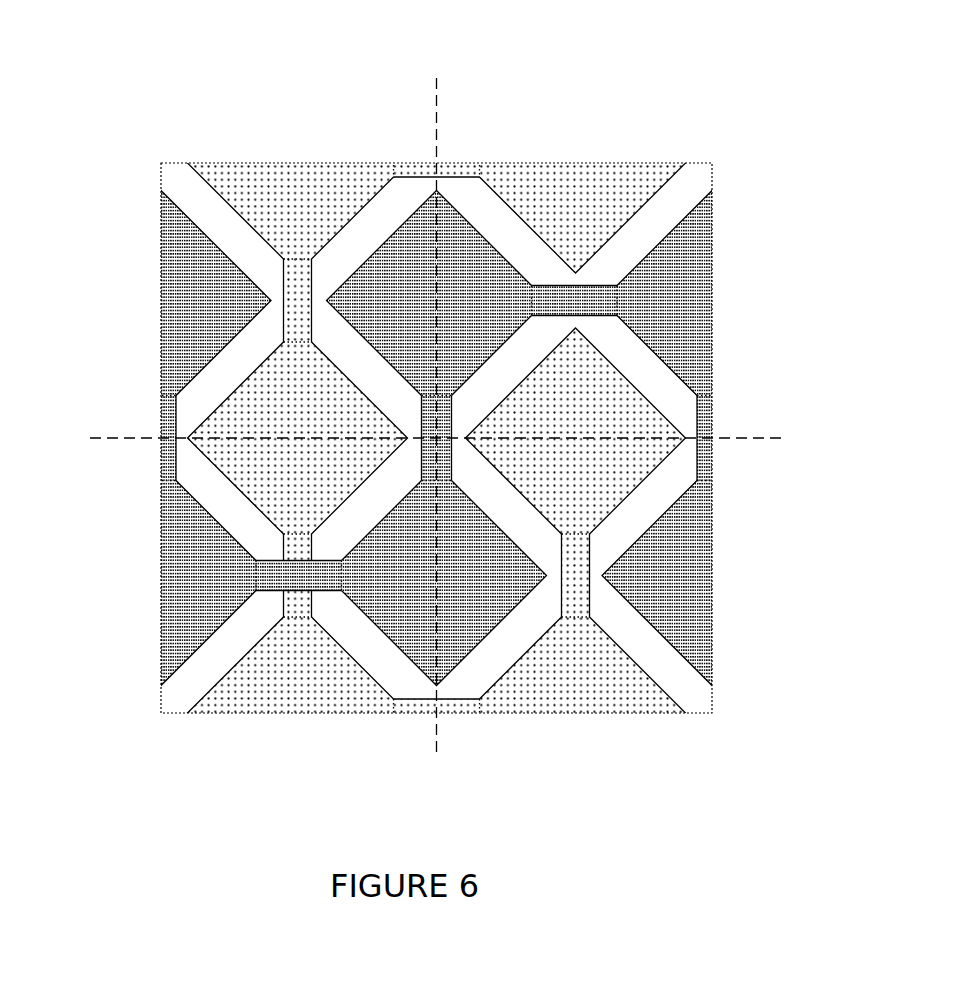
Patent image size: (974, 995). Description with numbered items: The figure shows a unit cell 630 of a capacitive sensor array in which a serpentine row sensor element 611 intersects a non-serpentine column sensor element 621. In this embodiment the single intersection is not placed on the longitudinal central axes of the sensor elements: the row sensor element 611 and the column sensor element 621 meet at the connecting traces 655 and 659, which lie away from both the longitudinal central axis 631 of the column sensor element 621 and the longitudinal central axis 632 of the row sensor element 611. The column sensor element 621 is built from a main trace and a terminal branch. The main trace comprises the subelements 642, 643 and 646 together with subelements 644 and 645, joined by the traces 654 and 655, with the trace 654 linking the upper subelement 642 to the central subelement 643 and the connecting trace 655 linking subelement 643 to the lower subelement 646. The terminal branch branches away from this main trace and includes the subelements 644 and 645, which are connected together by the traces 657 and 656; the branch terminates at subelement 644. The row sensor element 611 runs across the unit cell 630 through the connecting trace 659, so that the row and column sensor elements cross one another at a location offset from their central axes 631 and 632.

The unit cell 630 is at (160, 162).
The longitudinal central axis 631 is at (436, 70).
The longitudinal central axis 632 is at (790, 438).
The serpentine row sensor element 611 is at (486, 453).
The column sensor element 621 is at (476, 407).
The subelement 642 is at (316, 198).
The subelement 643 is at (314, 423).
The subelement 644 is at (591, 423).
The subelement 645 is at (594, 698).
The subelement 646 is at (322, 698).
The trace 654 is at (285, 258).
The connecting trace 655 is at (287, 607).
The trace 656 is at (588, 594).
The trace 657 is at (467, 706).
The connecting trace 659 is at (263, 590).